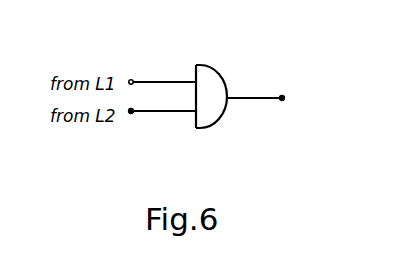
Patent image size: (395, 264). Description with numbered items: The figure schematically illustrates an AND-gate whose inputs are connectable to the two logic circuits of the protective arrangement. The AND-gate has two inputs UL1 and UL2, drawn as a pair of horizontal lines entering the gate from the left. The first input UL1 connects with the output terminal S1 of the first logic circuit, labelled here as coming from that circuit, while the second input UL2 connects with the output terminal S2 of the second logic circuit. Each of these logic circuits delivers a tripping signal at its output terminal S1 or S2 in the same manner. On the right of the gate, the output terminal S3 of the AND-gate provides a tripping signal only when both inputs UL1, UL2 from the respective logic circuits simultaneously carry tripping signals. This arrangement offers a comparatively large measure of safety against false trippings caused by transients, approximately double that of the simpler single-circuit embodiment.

The output terminal of logic circuit L1 S1 is at (138, 71).
The output terminal of logic circuit L2 S2 is at (132, 114).
The output terminal of the AND-gate S3 is at (284, 96).
The first input of the AND-gate UL1 is at (166, 81).
The second input of the AND-gate UL2 is at (166, 113).